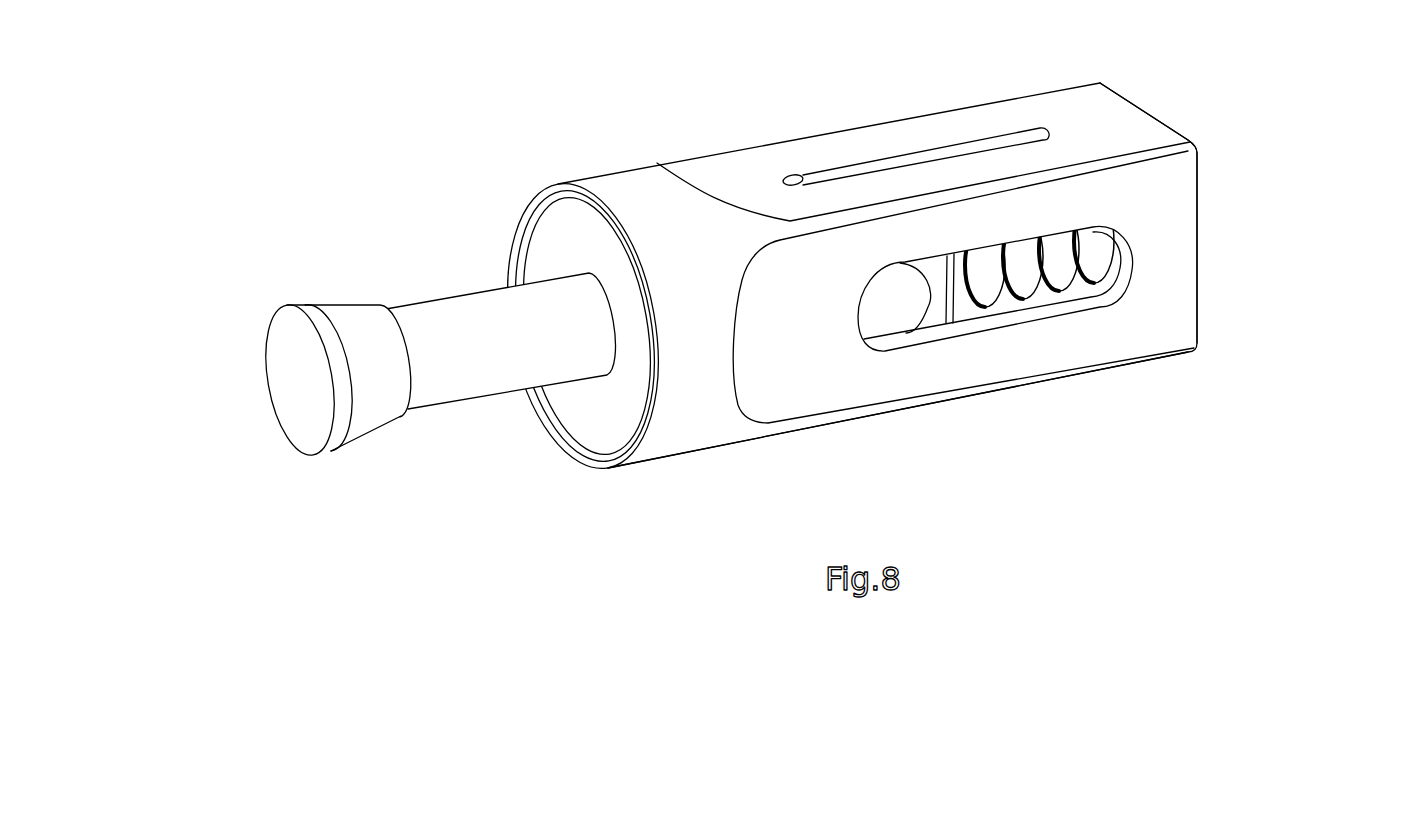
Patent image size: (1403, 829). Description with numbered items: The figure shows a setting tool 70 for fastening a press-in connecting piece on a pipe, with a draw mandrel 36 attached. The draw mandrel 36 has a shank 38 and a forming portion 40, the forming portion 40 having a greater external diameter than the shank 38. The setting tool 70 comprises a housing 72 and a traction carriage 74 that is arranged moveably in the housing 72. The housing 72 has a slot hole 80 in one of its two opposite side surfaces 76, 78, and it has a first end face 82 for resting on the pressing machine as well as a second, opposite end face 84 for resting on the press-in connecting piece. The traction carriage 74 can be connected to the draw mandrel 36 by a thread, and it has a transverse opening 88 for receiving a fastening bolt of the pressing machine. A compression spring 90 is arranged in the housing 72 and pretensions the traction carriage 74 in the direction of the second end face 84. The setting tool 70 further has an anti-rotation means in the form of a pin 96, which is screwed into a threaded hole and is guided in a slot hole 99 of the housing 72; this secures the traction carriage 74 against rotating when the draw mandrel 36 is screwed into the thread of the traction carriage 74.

The draw mandrel 36 is at (435, 350).
The shank 38 is at (477, 380).
The forming portion 40 is at (370, 420).
The setting tool 70 is at (553, 118).
The housing 72 is at (700, 430).
The traction carriage 74 is at (933, 313).
The side surface 76 is at (1130, 328).
The side surface 78 is at (985, 91).
The slot hole 80 is at (1117, 280).
The first end face 82 is at (1220, 195).
The second end face 84 is at (601, 421).
The transverse opening 88 is at (892, 317).
The compression spring 90 is at (1022, 293).
The pin 96 is at (792, 176).
The slot hole 99 is at (885, 162).